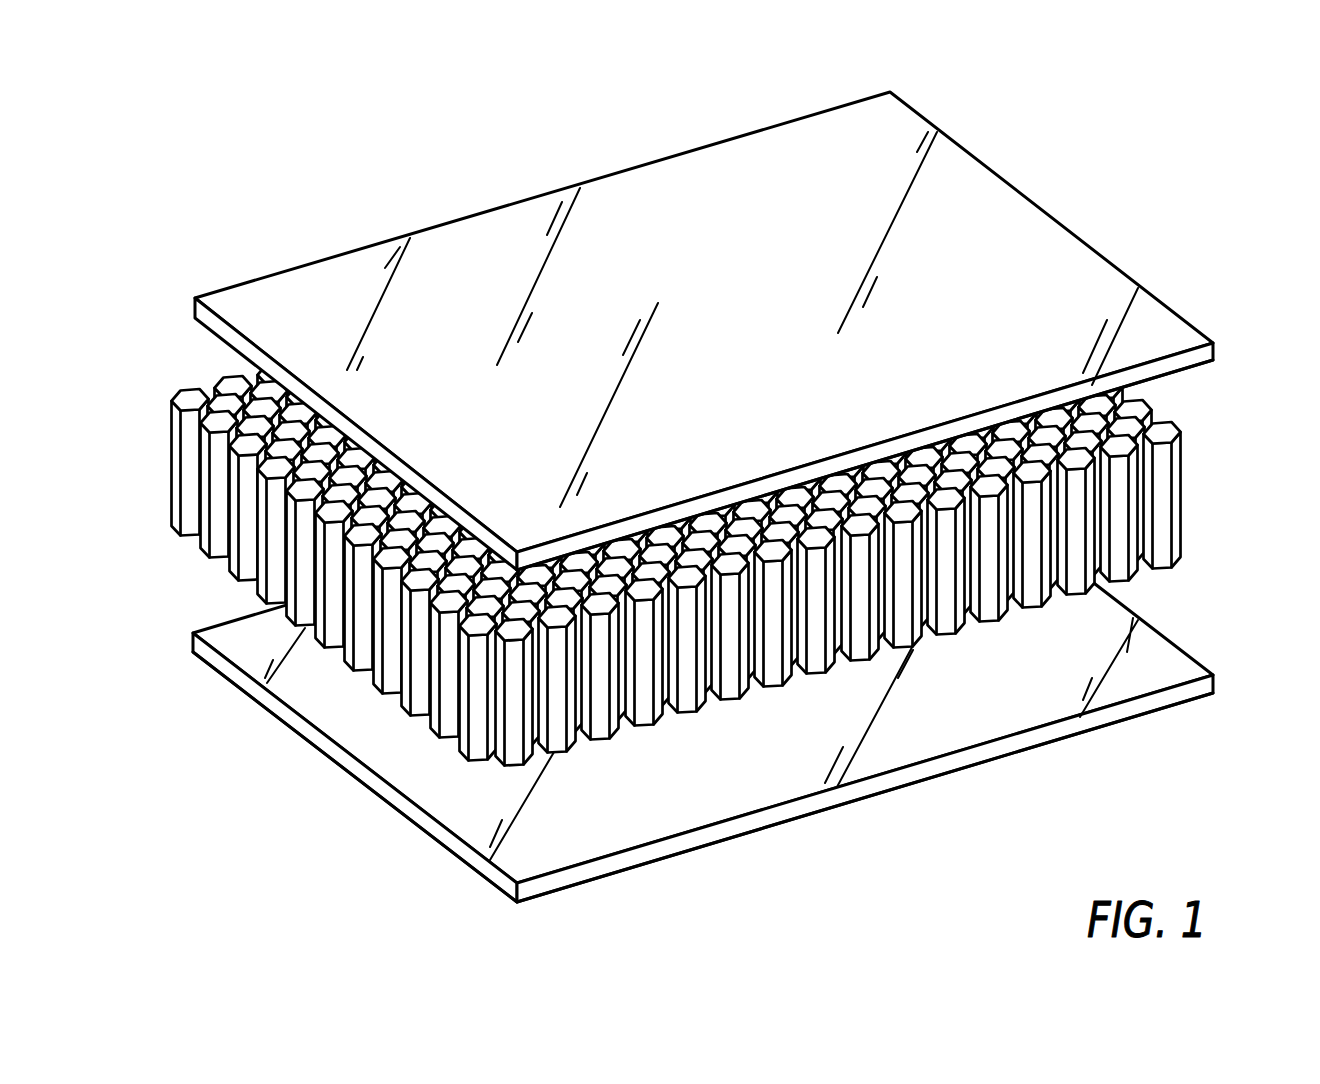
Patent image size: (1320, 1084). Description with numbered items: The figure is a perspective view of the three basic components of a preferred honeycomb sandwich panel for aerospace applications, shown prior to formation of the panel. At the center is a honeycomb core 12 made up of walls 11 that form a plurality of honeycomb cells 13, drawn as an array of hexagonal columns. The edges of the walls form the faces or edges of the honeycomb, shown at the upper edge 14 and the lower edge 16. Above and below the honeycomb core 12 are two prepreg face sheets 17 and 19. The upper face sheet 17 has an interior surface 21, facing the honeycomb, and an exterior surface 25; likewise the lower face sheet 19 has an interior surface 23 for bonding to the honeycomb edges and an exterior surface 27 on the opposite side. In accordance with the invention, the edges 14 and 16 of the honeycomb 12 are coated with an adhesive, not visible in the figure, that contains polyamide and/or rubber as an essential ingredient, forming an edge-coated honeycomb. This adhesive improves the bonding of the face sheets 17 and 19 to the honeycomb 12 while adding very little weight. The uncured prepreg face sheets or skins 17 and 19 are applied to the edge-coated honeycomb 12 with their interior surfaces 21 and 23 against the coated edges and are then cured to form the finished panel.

The walls 11 is at (705, 524).
The honeycomb core 12 is at (1230, 478).
The honeycomb cells 13 is at (1178, 420).
The honeycomb edge 14 is at (243, 388).
The honeycomb edge 16 is at (250, 577).
The prepreg face sheet 17 is at (706, 331).
The prepreg face sheet 19 is at (721, 779).
The interior surface 21 is at (1197, 358).
The interior surface 23 is at (744, 675).
The exterior surface 25 is at (1017, 217).
The exterior surface 27 is at (612, 873).